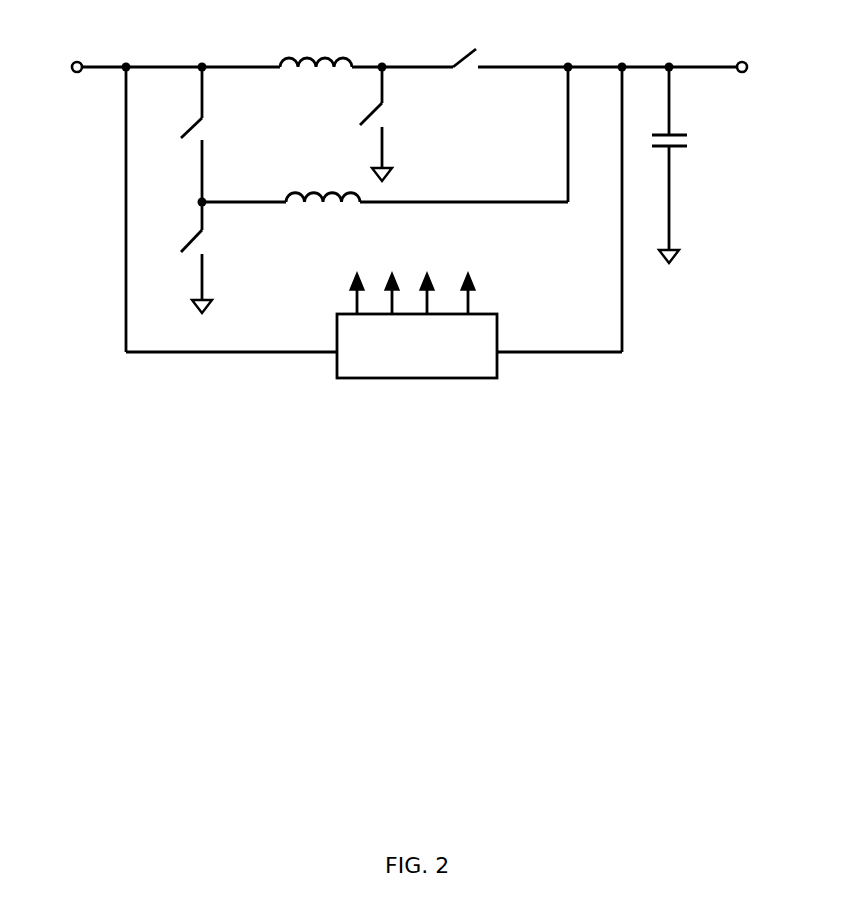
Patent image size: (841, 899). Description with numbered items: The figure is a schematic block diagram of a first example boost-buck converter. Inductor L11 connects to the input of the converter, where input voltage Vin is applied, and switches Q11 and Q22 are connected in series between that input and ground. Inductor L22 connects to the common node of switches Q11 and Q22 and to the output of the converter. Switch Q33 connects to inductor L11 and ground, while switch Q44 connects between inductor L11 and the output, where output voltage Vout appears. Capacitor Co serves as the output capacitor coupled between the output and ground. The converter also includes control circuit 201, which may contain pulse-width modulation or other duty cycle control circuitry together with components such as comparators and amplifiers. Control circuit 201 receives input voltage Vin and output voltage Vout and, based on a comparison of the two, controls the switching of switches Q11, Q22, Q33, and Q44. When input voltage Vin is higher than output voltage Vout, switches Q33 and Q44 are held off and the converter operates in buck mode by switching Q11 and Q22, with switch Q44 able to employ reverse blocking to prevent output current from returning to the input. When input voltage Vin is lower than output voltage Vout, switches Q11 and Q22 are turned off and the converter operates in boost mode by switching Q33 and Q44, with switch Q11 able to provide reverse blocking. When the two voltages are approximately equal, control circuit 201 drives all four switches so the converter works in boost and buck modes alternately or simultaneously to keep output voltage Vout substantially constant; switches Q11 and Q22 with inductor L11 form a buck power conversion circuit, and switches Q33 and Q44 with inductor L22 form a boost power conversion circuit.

The input voltage Vin is at (155, 71).
The output voltage Vout is at (769, 71).
The inductor L11 is at (366, 47).
The inductor L22 is at (385, 134).
The switch Q11 is at (211, 134).
The switch Q22 is at (211, 257).
The switch Q33 is at (390, 124).
The switch Q44 is at (595, 46).
The output capacitor Co is at (687, 165).
The control circuit 201 is at (482, 357).